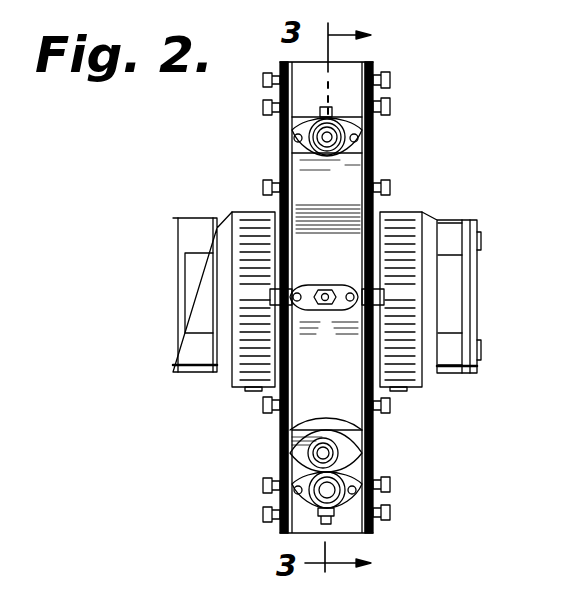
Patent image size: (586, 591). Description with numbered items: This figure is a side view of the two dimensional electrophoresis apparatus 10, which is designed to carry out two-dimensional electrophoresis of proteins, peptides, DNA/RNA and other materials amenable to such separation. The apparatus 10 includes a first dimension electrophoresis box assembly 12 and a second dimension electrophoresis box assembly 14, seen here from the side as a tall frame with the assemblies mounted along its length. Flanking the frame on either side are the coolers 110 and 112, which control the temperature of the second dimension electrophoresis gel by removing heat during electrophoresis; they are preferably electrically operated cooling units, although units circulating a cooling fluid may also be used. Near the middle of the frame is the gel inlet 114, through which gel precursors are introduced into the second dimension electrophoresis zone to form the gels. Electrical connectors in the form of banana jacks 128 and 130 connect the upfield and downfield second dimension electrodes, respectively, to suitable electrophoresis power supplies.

The two dimensional electrophoresis apparatus 10 is at (258, 145).
The first dimension electrophoresis box assembly 12 is at (368, 466).
The second dimension electrophoresis box assembly 14 is at (286, 200).
The cooler 110 is at (481, 273).
The cooler 112 is at (172, 308).
The gel inlet 114 is at (325, 305).
The banana jack 128 is at (290, 477).
The banana jack 130 is at (347, 133).